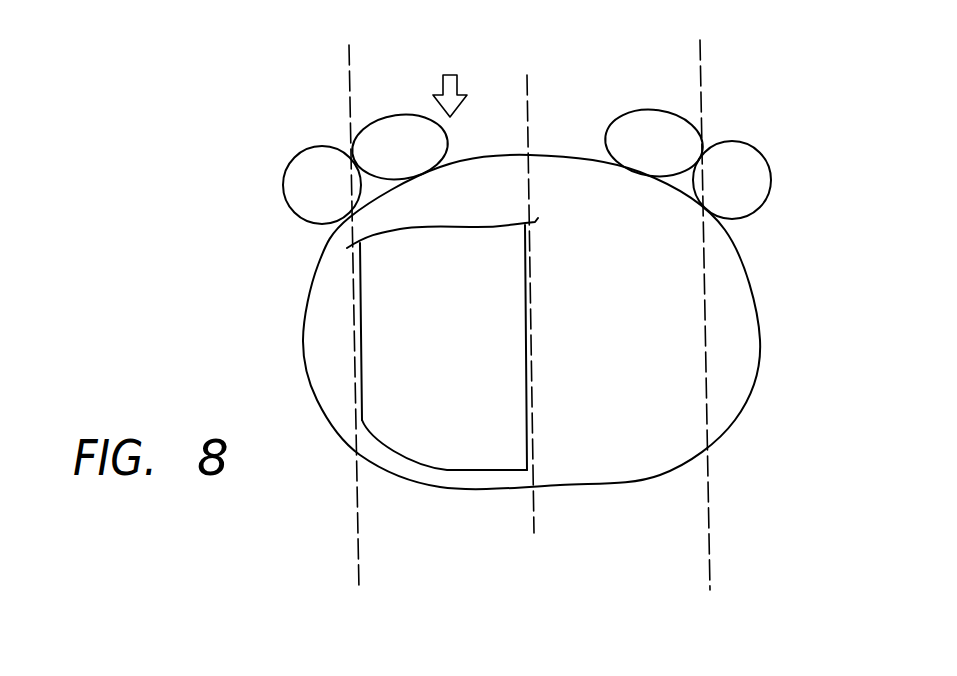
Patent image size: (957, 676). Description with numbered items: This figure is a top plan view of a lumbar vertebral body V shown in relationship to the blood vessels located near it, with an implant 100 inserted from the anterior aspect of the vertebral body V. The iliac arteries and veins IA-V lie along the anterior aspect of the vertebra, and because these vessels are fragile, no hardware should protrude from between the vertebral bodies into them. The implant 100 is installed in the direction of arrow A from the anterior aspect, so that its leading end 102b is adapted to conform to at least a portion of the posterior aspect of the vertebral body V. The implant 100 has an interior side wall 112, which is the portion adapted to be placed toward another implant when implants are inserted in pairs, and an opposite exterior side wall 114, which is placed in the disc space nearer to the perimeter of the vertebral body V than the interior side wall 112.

The implant 100 is at (440, 384).
The interior side wall 112 is at (527, 373).
The exterior side wall 114 is at (358, 318).
The leading end 102b is at (447, 470).
The vertebral body V is at (760, 365).
The iliac arteries and veins IA-V is at (392, 142).
The arrow A is at (452, 83).